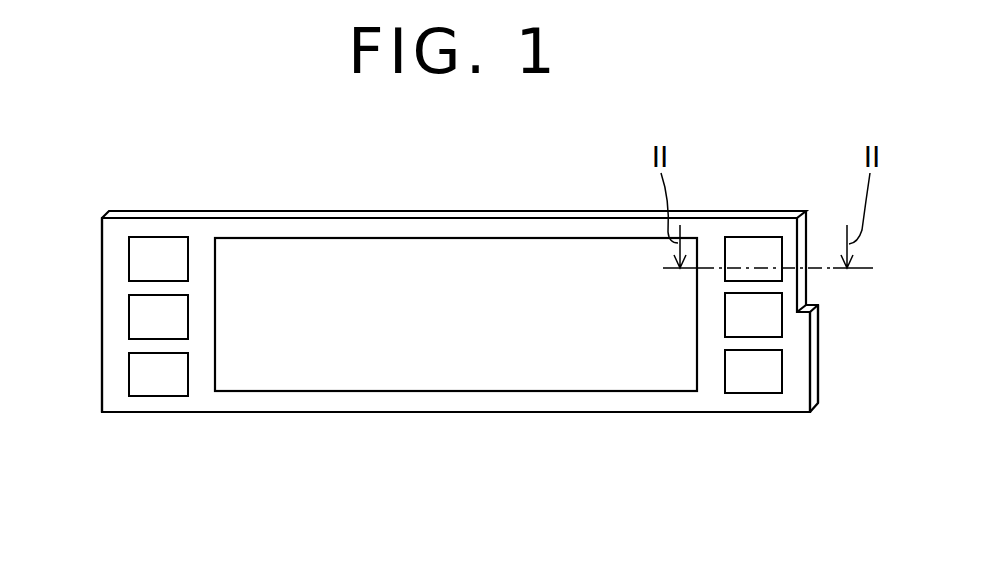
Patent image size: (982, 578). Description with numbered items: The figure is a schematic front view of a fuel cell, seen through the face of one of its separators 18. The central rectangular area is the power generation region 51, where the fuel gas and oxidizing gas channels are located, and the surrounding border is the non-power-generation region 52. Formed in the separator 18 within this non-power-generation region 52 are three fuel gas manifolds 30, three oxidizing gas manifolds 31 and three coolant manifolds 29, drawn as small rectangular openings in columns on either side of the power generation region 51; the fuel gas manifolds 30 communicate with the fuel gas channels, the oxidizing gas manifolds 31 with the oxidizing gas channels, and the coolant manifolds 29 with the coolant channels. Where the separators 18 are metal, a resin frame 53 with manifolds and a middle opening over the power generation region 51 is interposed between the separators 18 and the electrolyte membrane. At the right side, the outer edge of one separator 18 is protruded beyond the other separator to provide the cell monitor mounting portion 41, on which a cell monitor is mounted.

The separator 18 is at (760, 412).
The coolant manifold 29 is at (147, 377).
The fuel gas manifold 30 is at (147, 260).
The oxidizing gas manifold 31 is at (147, 318).
The cell monitor mounting portion 41 is at (800, 335).
The power generation region 51 is at (477, 255).
The non-power-generation region 52 is at (200, 257).
The resin frame 53 is at (813, 395).